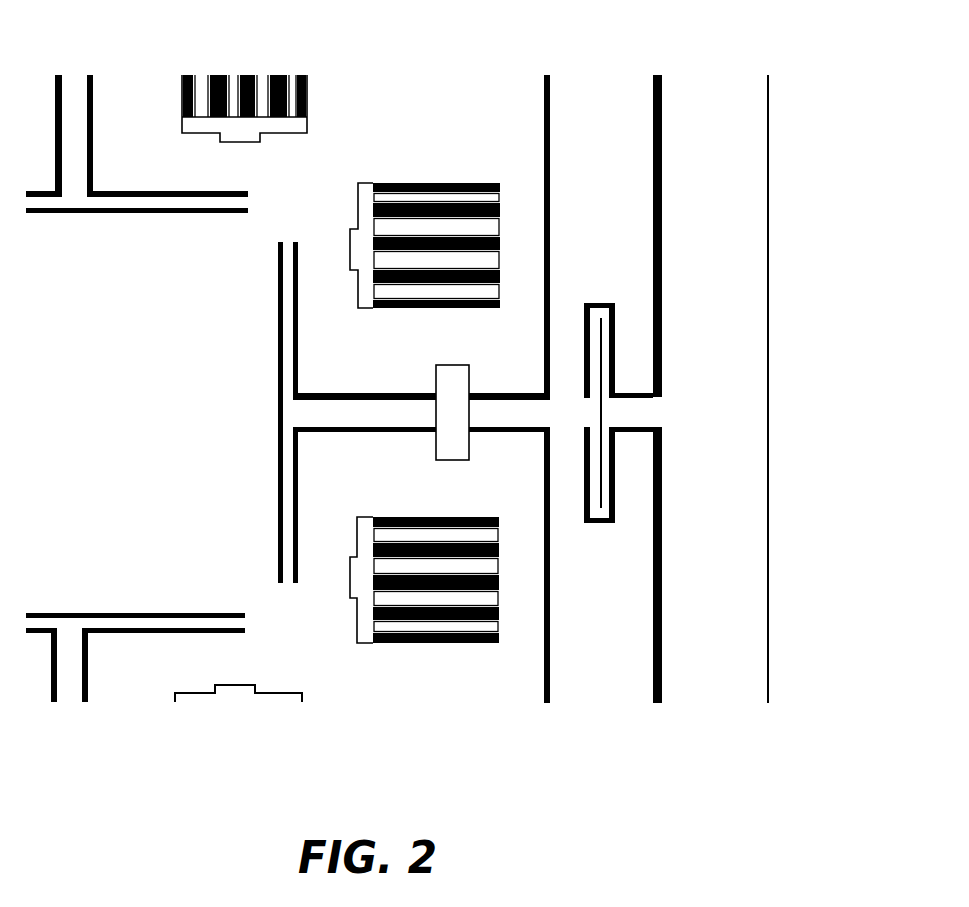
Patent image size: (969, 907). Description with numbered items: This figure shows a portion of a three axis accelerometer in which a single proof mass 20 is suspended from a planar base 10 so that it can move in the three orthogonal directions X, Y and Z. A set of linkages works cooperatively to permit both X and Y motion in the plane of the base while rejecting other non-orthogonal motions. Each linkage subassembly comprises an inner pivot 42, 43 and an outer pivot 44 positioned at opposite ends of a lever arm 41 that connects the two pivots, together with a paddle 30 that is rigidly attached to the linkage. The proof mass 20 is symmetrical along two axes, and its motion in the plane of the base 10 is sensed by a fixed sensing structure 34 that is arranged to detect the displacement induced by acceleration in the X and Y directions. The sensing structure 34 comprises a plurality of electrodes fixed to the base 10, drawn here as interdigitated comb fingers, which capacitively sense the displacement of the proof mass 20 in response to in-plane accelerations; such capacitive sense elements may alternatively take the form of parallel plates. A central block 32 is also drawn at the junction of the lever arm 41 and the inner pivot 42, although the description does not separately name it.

The planar base 10 is at (728, 419).
The proof mass 20 is at (122, 435).
The paddle 30 is at (605, 582).
The central anchor block 32 is at (467, 368).
The fixed sensing structure 34 is at (497, 237).
The lever arm 41 is at (493, 417).
The inner pivot 42 is at (297, 513).
The inner pivot 43 is at (211, 623).
The outer pivot 44 is at (601, 487).